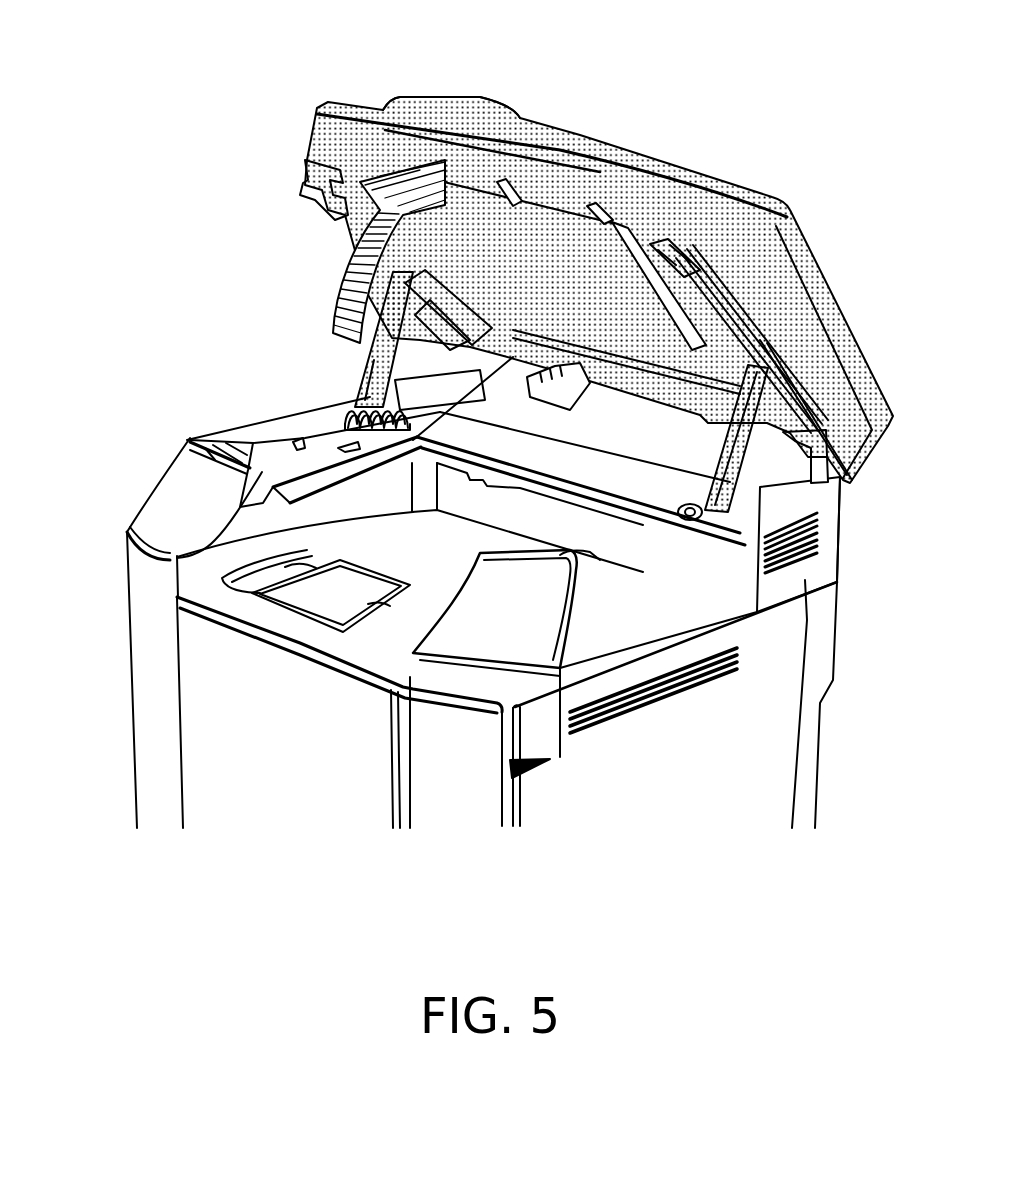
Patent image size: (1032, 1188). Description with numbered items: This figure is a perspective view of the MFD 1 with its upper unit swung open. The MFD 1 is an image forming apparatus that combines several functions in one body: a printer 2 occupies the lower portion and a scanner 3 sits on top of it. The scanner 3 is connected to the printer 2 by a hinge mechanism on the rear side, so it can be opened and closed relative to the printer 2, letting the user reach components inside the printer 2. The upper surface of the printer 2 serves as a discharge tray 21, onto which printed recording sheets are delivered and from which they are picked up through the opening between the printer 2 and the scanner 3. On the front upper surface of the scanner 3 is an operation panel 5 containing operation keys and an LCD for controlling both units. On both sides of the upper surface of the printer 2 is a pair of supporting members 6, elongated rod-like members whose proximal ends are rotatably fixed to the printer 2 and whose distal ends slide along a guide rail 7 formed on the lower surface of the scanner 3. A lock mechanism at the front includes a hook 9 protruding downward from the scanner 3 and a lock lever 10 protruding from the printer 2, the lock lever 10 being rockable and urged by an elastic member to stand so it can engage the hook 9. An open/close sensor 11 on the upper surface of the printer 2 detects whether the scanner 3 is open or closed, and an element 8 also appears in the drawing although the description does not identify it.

The MFD 1 is at (243, 878).
The printer 2 is at (116, 722).
The scanner 3 is at (582, 88).
The operation panel 5 is at (397, 110).
The supporting member 6 is at (360, 357).
The guide rail 7 is at (357, 222).
The spring 8 is at (352, 410).
The hook 9 is at (310, 168).
The lock lever 10 is at (252, 452).
The open/close sensor 11 is at (332, 432).
The discharge tray 21 is at (390, 540).